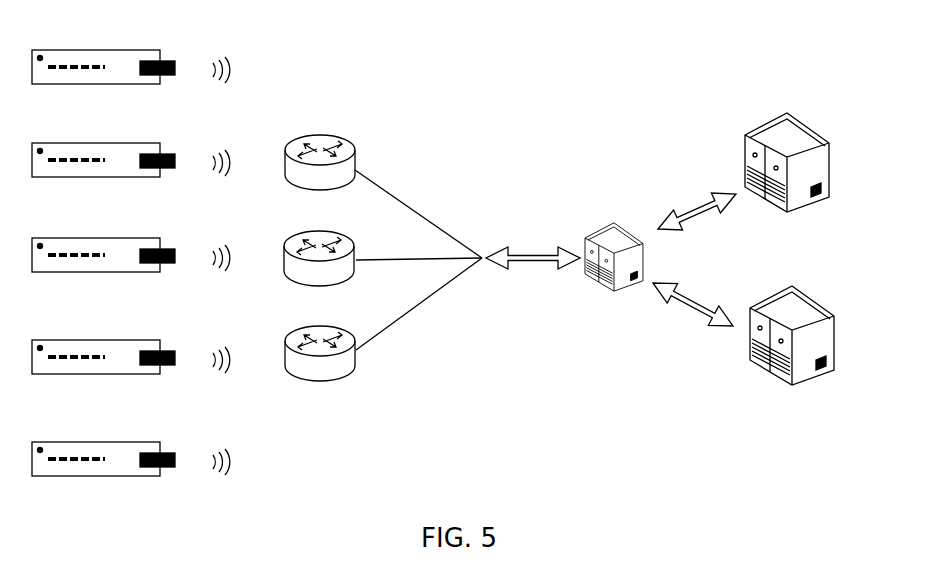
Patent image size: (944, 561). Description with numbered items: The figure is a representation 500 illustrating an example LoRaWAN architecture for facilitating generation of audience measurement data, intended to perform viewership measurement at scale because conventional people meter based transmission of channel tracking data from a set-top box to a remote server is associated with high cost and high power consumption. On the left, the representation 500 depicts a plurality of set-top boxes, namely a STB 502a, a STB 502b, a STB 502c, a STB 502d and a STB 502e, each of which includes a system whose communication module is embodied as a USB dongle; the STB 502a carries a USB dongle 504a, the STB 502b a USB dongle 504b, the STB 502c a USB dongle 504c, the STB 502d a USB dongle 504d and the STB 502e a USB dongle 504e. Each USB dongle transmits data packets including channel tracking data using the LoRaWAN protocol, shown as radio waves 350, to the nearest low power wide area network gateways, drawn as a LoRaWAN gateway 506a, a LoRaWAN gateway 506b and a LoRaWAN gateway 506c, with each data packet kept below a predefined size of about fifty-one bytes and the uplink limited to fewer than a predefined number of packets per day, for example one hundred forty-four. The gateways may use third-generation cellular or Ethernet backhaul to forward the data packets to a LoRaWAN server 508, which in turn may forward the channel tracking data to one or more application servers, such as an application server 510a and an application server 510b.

The representation 500 is at (819, 448).
The STB 502a is at (90, 50).
The STB 502b is at (90, 143).
The STB 502c is at (90, 238).
The STB 502d is at (90, 340).
The STB 502e is at (90, 442).
The USB dongle 504a is at (168, 62).
The USB dongle 504b is at (168, 155).
The USB dongle 504c is at (168, 250).
The USB dongle 504d is at (168, 352).
The USB dongle 504e is at (168, 454).
The radio waves 350 is at (222, 66).
The LoRaWAN gateway 506a is at (338, 135).
The LoRaWAN gateway 506b is at (338, 231).
The LoRaWAN gateway 506c is at (338, 326).
The LoRaWAN server 508 is at (598, 352).
The application server 510a is at (831, 170).
The application server 510b is at (833, 342).